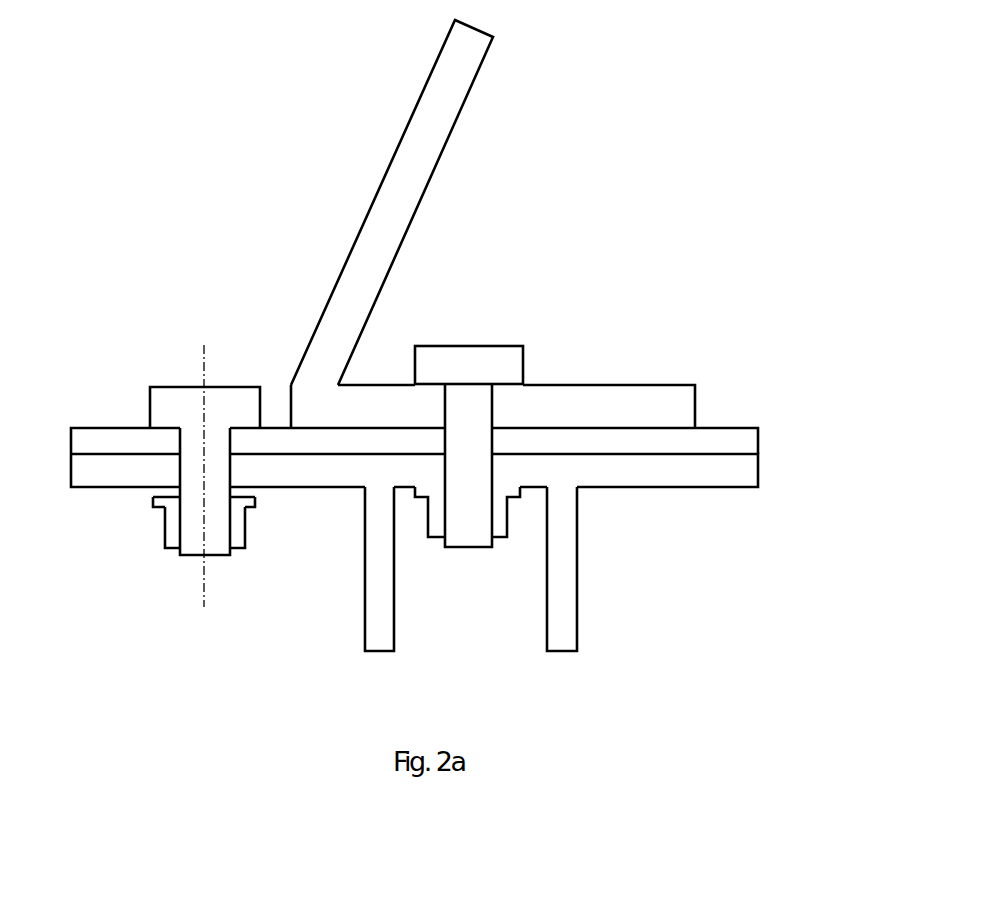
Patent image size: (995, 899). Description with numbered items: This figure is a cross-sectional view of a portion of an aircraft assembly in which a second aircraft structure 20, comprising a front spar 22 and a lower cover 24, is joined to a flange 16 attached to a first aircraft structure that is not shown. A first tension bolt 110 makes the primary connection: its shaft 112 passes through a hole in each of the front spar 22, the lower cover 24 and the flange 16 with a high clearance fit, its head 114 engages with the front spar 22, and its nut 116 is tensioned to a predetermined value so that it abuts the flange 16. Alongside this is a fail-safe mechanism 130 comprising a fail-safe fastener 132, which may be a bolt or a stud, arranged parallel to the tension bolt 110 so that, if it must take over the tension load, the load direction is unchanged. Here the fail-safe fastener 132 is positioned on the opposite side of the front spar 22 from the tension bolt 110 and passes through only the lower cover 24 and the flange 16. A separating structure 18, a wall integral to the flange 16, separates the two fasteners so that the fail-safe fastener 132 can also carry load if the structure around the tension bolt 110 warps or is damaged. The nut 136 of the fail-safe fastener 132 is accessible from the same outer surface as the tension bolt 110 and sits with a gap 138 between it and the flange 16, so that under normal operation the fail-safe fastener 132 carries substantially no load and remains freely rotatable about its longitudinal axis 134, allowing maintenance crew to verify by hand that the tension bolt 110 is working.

The second aircraft structure 20 is at (493, 224).
The front spar 22 is at (463, 112).
The head 114 is at (422, 346).
The first tension bolt 110 is at (525, 474).
The shaft 112 is at (472, 548).
The nut 116 is at (497, 537).
The lower cover 24 is at (758, 433).
The flange 16 is at (713, 486).
The separating structure 18 is at (363, 627).
The fail-safe mechanism 130 is at (147, 470).
The fail-safe fastener 132 is at (150, 398).
The gap 138 is at (163, 491).
The nut 136 is at (163, 539).
The longitudinal axis 134 is at (203, 590).